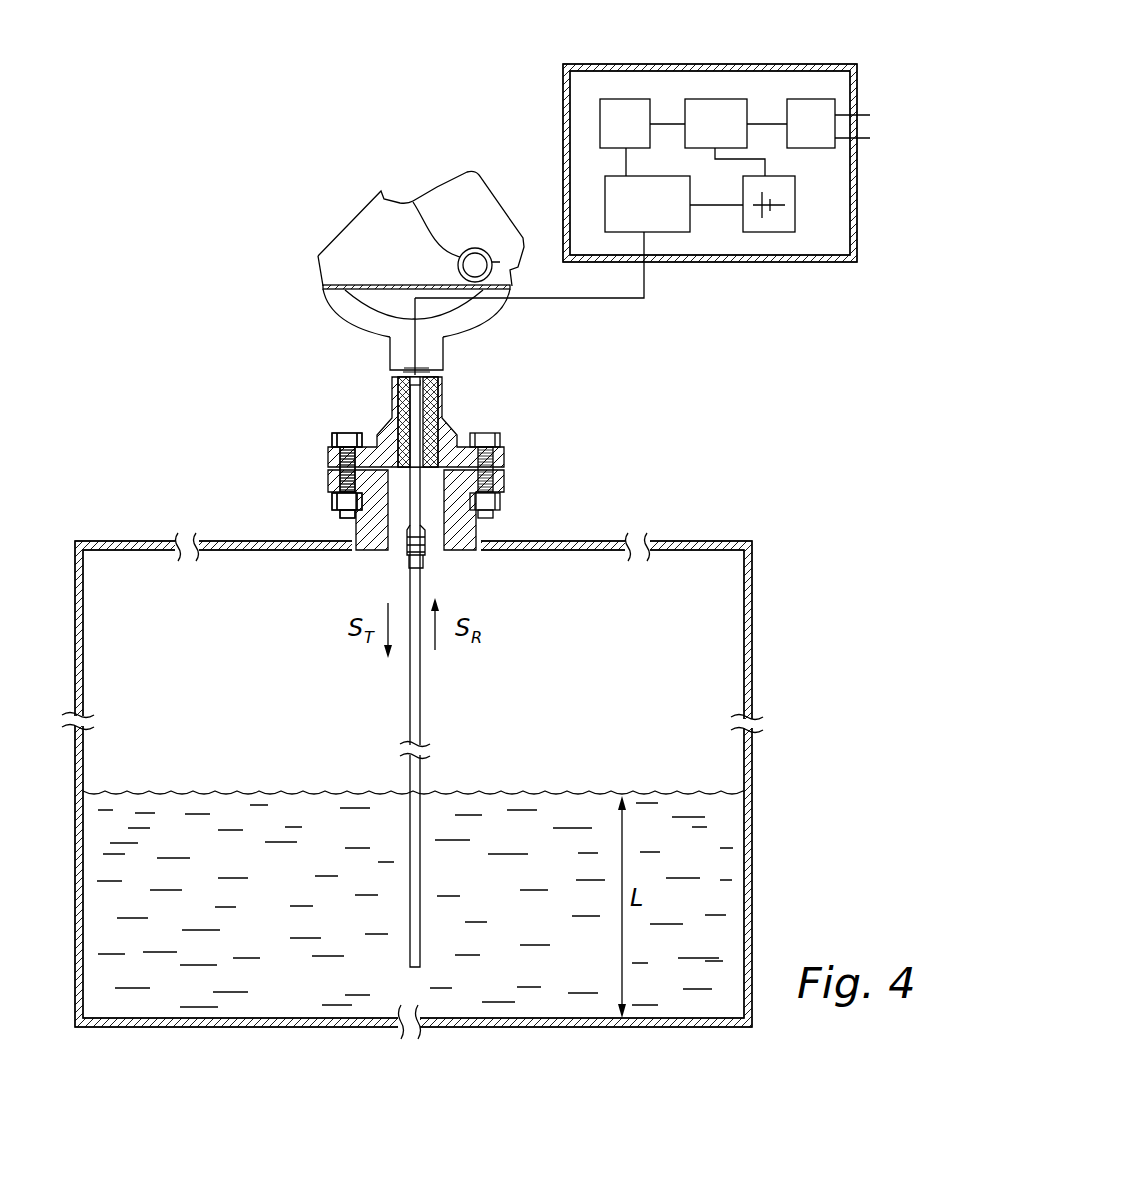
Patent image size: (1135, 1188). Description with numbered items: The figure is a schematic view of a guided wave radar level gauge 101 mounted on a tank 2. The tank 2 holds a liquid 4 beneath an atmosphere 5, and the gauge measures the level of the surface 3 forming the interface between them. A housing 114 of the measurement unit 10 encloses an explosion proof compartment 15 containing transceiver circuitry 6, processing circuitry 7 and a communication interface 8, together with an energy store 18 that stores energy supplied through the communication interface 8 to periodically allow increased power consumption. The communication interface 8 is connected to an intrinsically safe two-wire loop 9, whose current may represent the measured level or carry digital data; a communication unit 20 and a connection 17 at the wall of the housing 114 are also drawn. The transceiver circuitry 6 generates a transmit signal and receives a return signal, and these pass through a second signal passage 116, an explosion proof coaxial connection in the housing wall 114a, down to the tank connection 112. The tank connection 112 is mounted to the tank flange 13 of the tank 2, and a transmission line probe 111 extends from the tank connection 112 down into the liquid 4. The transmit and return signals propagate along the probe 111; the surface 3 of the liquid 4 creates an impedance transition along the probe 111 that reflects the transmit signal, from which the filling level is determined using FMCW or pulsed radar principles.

The tank 2 is at (562, 543).
The surface 3 is at (203, 789).
The liquid 4 is at (271, 918).
The atmosphere 5 is at (276, 673).
The transceiver circuitry 6 is at (690, 218).
The processing circuitry 7 is at (625, 103).
The communication interface 8 is at (710, 99).
The two-wire loop 9 is at (863, 113).
The measurement unit 10 is at (347, 323).
The tank flange 13 is at (474, 537).
The explosion proof compartment 15 is at (807, 237).
The terminal / wall opening 17 is at (858, 112).
The energy store 18 is at (765, 232).
The communication unit 20 is at (808, 99).
The radar level gauge 101 is at (276, 264).
The transmission line probe 111 is at (418, 680).
The tank connection 112 is at (457, 428).
The housing 114 is at (857, 196).
The housing wall 114a is at (857, 248).
The second signal passage 116 is at (648, 262).